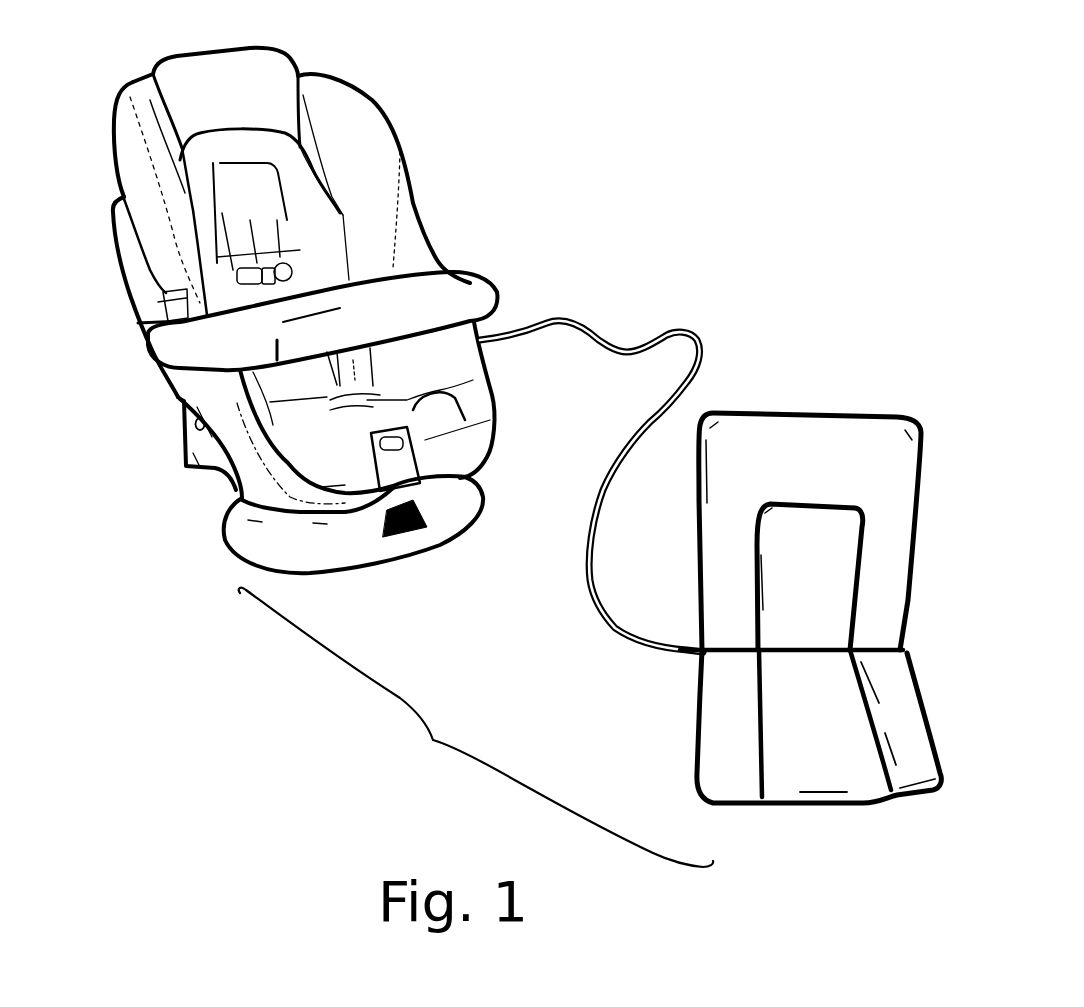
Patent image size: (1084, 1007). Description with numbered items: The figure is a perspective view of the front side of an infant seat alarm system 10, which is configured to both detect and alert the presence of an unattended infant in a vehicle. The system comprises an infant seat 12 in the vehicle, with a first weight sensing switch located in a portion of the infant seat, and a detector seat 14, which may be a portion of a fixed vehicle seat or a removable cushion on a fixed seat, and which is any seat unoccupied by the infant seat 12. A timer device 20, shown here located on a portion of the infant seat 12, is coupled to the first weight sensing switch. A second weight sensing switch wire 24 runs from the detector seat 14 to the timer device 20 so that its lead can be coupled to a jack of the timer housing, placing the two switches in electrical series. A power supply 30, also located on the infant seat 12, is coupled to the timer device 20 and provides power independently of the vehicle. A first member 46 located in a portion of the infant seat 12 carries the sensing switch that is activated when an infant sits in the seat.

The infant seat alarm system 10 is at (428, 747).
The infant seat 12 is at (214, 501).
The detector seat 14 is at (760, 810).
The timer device 20 is at (395, 263).
The second weight sensing switch wire 24 is at (693, 366).
The power supply 30 is at (143, 333).
The first member 46 is at (497, 407).